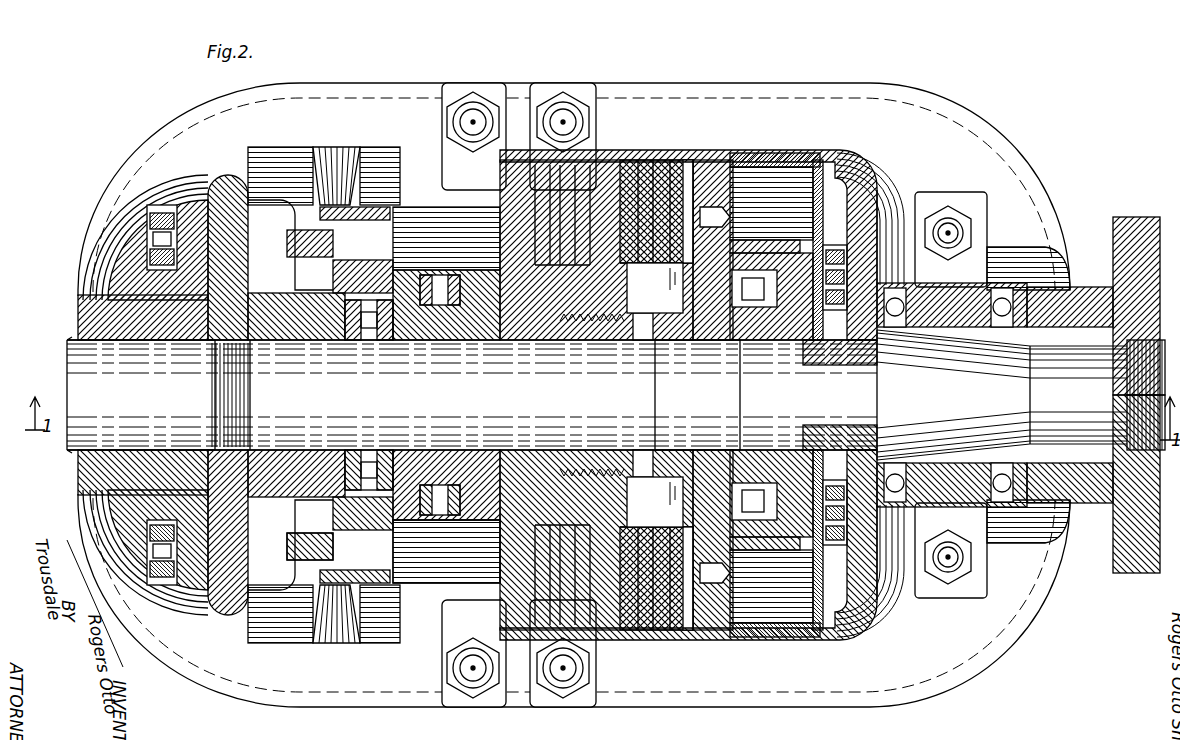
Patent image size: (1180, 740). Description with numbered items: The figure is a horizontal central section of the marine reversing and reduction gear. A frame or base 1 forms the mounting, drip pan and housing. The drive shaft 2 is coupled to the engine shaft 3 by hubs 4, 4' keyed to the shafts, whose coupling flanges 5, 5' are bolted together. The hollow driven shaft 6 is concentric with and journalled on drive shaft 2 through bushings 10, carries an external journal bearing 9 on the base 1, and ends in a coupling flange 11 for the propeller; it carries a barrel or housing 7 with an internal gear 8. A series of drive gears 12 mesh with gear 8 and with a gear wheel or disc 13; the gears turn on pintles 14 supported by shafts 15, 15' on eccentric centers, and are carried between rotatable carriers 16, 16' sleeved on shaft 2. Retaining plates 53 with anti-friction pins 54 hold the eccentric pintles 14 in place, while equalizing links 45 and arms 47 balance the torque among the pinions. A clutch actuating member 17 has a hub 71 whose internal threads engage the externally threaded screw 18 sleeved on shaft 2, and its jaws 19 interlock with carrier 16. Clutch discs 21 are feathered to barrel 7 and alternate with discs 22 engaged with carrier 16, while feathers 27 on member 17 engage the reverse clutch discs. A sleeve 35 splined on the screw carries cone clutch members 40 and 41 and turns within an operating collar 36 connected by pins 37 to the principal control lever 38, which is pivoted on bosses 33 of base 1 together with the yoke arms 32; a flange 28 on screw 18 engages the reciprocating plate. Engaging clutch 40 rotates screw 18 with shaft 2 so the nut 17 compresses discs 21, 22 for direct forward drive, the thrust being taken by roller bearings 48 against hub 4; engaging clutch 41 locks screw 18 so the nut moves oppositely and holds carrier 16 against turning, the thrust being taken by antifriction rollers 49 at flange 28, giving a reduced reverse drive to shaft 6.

The frame or base 1 is at (574, 345).
The drive shaft 2 is at (472, 370).
The engine shaft 3 is at (141, 370).
The coupling hub 4 is at (296, 339).
The coupling hub 4' is at (122, 317).
The coupling flange 5 is at (158, 238).
The coupling flange 5' is at (137, 237).
The driven shaft 6 is at (1002, 362).
The barrel or housing 7 is at (872, 200).
The internal gear 8 is at (835, 188).
The external journal bearing 9 is at (943, 313).
The bushing or bearing 10 is at (865, 353).
The coupling flange 11 is at (1130, 219).
The drive gears 12 is at (805, 175).
The gear wheel or disc 13 is at (840, 258).
The pintles 14 is at (760, 205).
The shaft 15 is at (719, 396).
The stub shaft 15' is at (867, 198).
The rotatable carrier 16 is at (697, 363).
The rotatable carrier 16' is at (771, 323).
The clutch actuating member 17 is at (600, 177).
The screw threaded member 18 is at (428, 342).
The interlocking jaws 19 is at (655, 395).
The clutch discs 21 is at (700, 175).
The clutch discs 22 is at (645, 170).
The feathers 27 is at (593, 283).
The flange 28 is at (420, 526).
The yoke arms 32 is at (347, 143).
The bosses 33 is at (323, 150).
The sleeve 35 is at (300, 243).
The operating collar 36 is at (330, 285).
The pins 37 is at (372, 180).
The principal control lever 38 is at (313, 567).
The cone clutch member 40 is at (213, 172).
The cone clutch member 41 is at (396, 205).
The equalizing links 45 is at (838, 294).
The arms 47 is at (840, 275).
The roller bearings 48 is at (368, 342).
The antifriction rollers 49 is at (443, 307).
The retaining plates 53 is at (882, 240).
The anti-friction pins 54 is at (946, 222).
The hub 71 is at (612, 302).